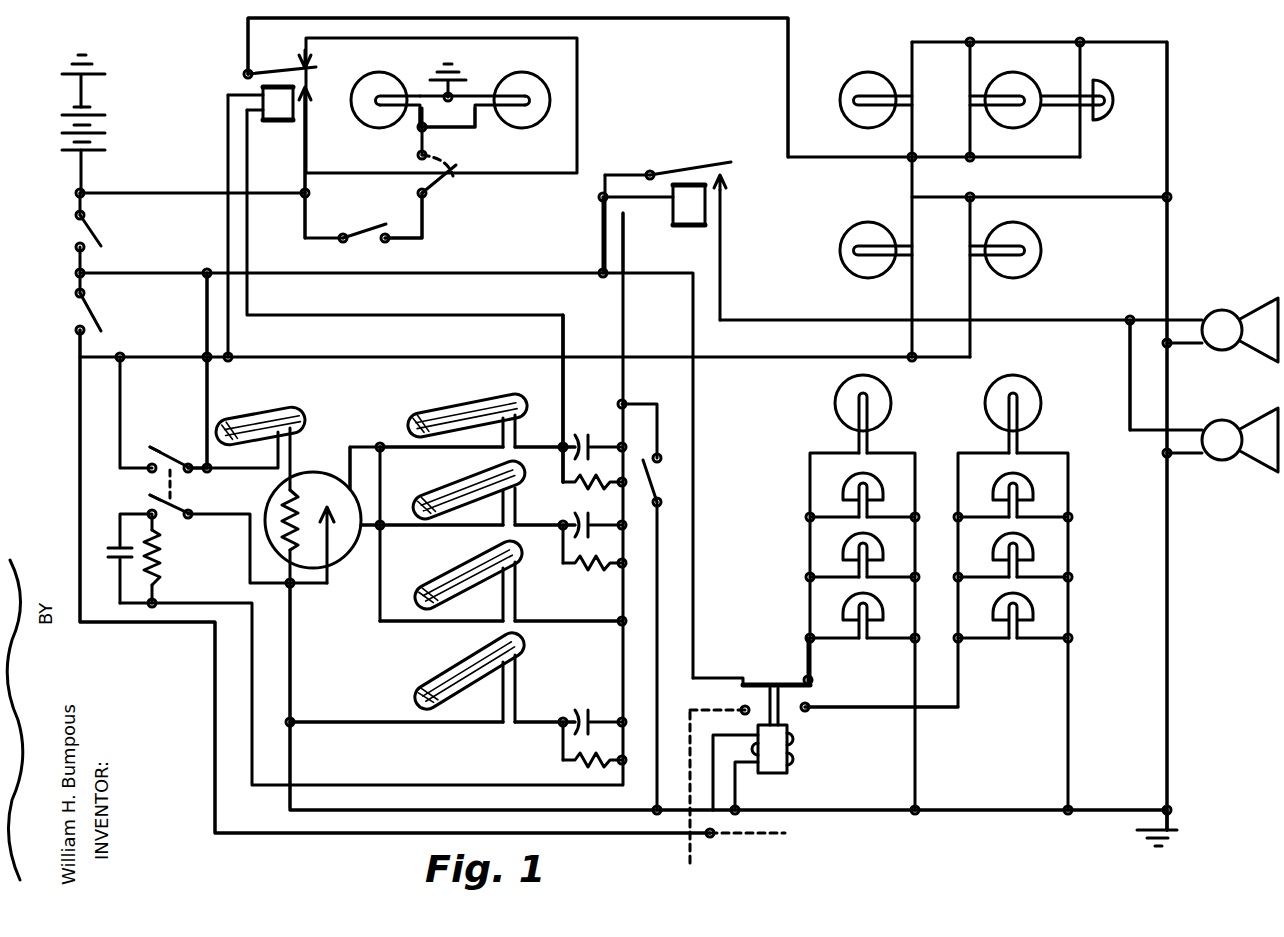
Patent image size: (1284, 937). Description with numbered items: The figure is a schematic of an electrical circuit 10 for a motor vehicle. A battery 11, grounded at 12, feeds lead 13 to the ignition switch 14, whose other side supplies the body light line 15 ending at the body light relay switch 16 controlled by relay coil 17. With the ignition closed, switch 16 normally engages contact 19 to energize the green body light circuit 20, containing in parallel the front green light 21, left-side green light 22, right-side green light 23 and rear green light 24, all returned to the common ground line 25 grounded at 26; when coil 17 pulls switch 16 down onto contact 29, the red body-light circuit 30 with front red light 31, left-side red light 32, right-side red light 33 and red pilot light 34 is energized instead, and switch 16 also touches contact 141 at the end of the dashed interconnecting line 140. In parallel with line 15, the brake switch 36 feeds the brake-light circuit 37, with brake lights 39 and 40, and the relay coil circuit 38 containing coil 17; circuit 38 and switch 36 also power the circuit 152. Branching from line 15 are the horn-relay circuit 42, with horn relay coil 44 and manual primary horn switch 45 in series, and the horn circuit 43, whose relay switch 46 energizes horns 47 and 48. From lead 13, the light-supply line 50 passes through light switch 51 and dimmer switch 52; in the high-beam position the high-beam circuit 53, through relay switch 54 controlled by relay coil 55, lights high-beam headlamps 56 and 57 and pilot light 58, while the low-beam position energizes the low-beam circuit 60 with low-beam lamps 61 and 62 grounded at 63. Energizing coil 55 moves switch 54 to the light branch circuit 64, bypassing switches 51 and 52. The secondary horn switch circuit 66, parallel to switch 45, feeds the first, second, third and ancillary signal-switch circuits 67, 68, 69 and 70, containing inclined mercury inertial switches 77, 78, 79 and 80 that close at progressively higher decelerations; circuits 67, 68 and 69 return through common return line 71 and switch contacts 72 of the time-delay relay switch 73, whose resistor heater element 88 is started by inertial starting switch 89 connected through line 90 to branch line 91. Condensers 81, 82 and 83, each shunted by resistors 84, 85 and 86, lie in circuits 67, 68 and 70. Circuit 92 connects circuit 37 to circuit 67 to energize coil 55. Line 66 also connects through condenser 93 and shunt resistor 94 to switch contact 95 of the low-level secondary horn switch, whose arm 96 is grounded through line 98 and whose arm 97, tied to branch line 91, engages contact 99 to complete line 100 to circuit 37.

The electrical circuit 10 is at (50, 430).
The battery 11 is at (50, 139).
The ground 12 is at (60, 76).
The lead 13 is at (78, 173).
The ignition switch 14 is at (95, 232).
The body light line 15 is at (518, 273).
The body light relay switch 16 is at (770, 681).
The relay coil 17 is at (765, 771).
The contact 19 is at (812, 681).
The green body light circuit 20 is at (808, 560).
The front green light 21 is at (835, 399).
The left-side green light 22 is at (845, 486).
The right-side green light 23 is at (845, 546).
The rear green light 24 is at (845, 608).
The common ground line 25 is at (292, 622).
The ground 26 is at (1135, 840).
The contact 29 is at (808, 708).
The red body-light circuit 30 is at (958, 678).
The front red light 31 is at (985, 399).
The left-side red light 32 is at (995, 486).
The right-side red light 33 is at (995, 546).
The red pilot light 34 is at (995, 608).
The brake switch 36 is at (96, 312).
The brake-light circuit 37 is at (443, 357).
The body-light relay coil circuit 38 is at (78, 505).
The brake light 39 is at (846, 236).
The brake light 40 is at (1038, 240).
The horn-relay circuit 42 is at (625, 404).
The horn circuit 43 is at (620, 172).
The horn relay coil 44 is at (695, 226).
The manual primary horn switch 45 is at (650, 478).
The relay switch 46 is at (702, 170).
The horn 47 is at (1250, 312).
The horn 48 is at (1248, 420).
The light-supply line 50 is at (157, 193).
The light switch 51 is at (368, 228).
The dimmer switch 52 is at (436, 185).
The high-beam circuit 53 is at (577, 112).
The relay switch 54 is at (266, 70).
The relay coil 55 is at (280, 119).
The high-beam headlamp 56 is at (875, 72).
The high-beam headlamp 57 is at (1050, 68).
The pilot light 58 is at (1110, 82).
The low-beam circuit 60 is at (420, 145).
The low-beam lamp 61 is at (355, 90).
The low-beam lamp 62 is at (536, 85).
The ground 63 is at (452, 76).
The light branch circuit 64 is at (306, 165).
The secondary horn switch circuit 66 is at (200, 603).
The first signal-switch circuit 67 is at (532, 447).
The second signal-switch circuit 68 is at (528, 525).
The third signal-switch circuit 69 is at (530, 621).
The ancillary signal-switch circuit 70 is at (530, 722).
The common return line 71 is at (352, 445).
The switch contacts 72 is at (340, 562).
The time-delay relay switch 73 is at (318, 472).
The inertial switch 77 is at (460, 415).
The inertial switch 78 is at (440, 488).
The inertial switch 79 is at (440, 578).
The inertial switch 80 is at (447, 680).
The condenser 81 is at (586, 435).
The condenser 82 is at (575, 540).
The condenser 83 is at (588, 716).
The resistor 84 is at (592, 482).
The resistor 85 is at (578, 570).
The resistor 86 is at (568, 762).
The resistor heater element 88 is at (303, 513).
The inertial starting switch 89 is at (258, 412).
The line 90 is at (232, 469).
The branch line 91 is at (207, 325).
The circuit 92 is at (227, 241).
The condenser 93 is at (108, 548).
The shunt resistor 94 is at (160, 557).
The switch contact 95 is at (148, 497).
The switch arm 96 is at (178, 511).
The switch arm 97 is at (165, 452).
The line 98 is at (212, 514).
The contact 99 is at (148, 453).
The line 100 is at (122, 401).
The interconnecting line 140 is at (692, 865).
The contact 141 is at (742, 708).
The circuit 152 is at (795, 836).